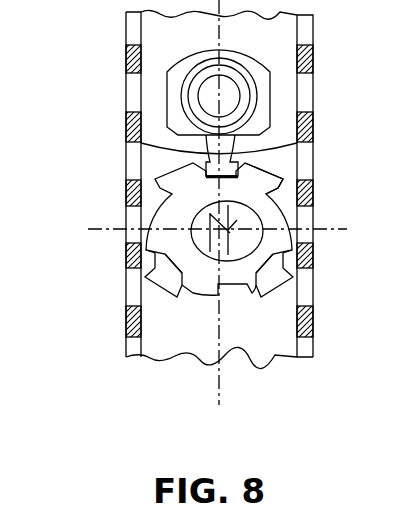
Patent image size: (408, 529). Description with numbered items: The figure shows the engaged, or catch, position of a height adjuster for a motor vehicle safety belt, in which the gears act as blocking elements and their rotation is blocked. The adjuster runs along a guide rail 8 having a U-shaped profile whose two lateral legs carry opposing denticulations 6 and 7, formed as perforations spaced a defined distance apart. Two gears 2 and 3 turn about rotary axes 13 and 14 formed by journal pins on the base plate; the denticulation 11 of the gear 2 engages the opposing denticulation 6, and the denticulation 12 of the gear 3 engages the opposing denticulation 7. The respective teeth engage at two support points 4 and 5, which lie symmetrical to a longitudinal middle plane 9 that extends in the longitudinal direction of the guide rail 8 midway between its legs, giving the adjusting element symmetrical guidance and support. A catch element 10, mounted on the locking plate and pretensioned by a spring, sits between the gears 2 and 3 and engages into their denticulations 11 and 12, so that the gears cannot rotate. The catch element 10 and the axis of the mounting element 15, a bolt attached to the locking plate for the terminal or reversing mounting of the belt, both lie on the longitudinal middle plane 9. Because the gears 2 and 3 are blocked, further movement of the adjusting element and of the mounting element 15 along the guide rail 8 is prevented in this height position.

The gear 2 is at (158, 192).
The gear 3 is at (282, 200).
The support point 4 is at (313, 233).
The support point 5 is at (106, 232).
The opposing denticulation 6 is at (307, 92).
The opposing denticulation 7 is at (131, 100).
The guide rail 8 is at (126, 36).
The longitudinal middle plane 9 is at (215, 376).
The catch element 10 is at (207, 147).
The denticulation 11 is at (277, 285).
The denticulation 12 is at (160, 288).
The rotary axis 13 is at (215, 234).
The rotary axis 14 is at (240, 240).
The mounting element 15 is at (232, 104).